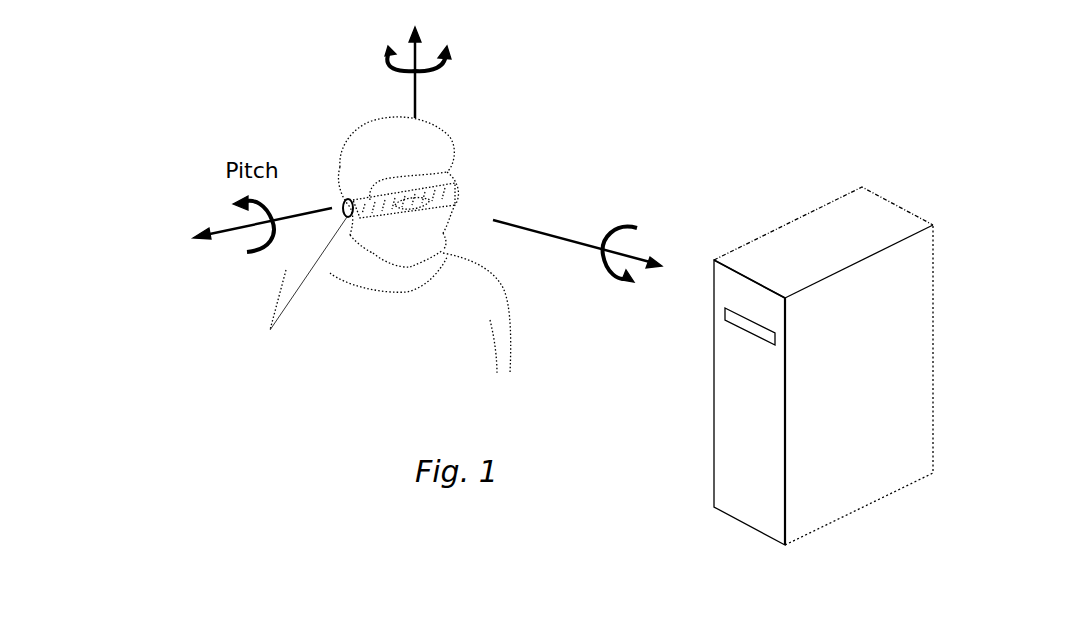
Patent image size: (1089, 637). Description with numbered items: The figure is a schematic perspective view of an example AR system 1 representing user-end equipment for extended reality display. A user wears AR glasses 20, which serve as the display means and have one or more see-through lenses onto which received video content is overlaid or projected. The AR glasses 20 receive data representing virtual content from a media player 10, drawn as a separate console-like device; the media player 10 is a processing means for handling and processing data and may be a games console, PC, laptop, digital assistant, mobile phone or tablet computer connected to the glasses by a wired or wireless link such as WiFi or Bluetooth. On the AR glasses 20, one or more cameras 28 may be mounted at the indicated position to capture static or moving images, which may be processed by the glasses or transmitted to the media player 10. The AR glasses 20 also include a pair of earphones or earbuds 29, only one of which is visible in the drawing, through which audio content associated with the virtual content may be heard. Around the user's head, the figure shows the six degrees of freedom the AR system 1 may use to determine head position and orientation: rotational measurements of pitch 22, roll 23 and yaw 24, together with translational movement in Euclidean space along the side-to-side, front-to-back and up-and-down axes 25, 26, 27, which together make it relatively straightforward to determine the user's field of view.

The AR system 1 is at (997, 117).
The media player 10 is at (887, 490).
The AR glasses 20 is at (468, 204).
The pitch 22 is at (273, 253).
The roll 23 is at (628, 230).
The yaw 24 is at (386, 58).
The side-to-side axis 25 is at (222, 228).
The front-to-back axis 26 is at (588, 242).
The up-and-down axis 27 is at (418, 88).
The camera 28 is at (465, 190).
The earphones or earbuds 29 is at (347, 205).